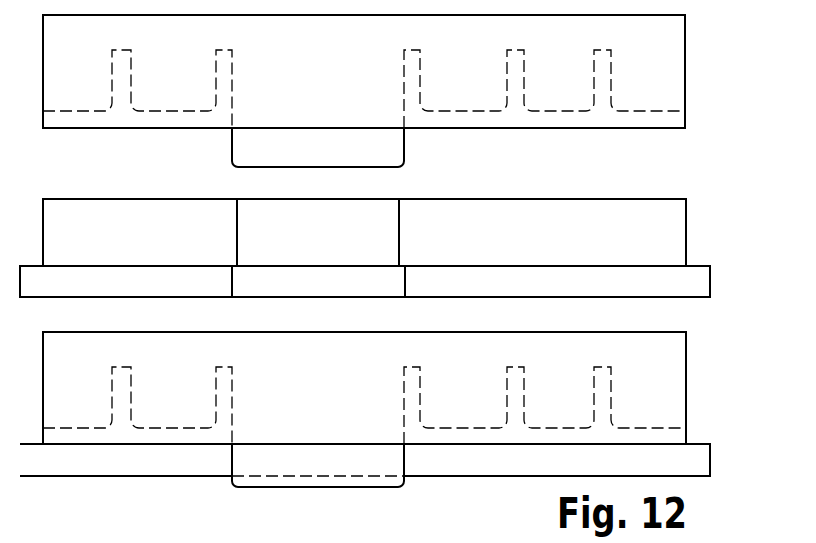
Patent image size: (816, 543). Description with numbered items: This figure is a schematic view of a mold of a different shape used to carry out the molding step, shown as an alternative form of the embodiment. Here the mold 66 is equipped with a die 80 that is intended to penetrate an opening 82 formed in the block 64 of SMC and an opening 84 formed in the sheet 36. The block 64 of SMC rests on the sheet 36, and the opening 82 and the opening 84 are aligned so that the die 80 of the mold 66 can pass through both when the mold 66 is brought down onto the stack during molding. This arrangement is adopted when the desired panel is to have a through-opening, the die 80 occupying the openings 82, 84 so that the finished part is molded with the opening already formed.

The sheet 36 is at (677, 280).
The block of SMC 64 is at (660, 232).
The mold 66 is at (660, 64).
The die 80 is at (374, 148).
The opening in the block of SMC 82 is at (237, 232).
The opening of the sheet 84 is at (232, 280).